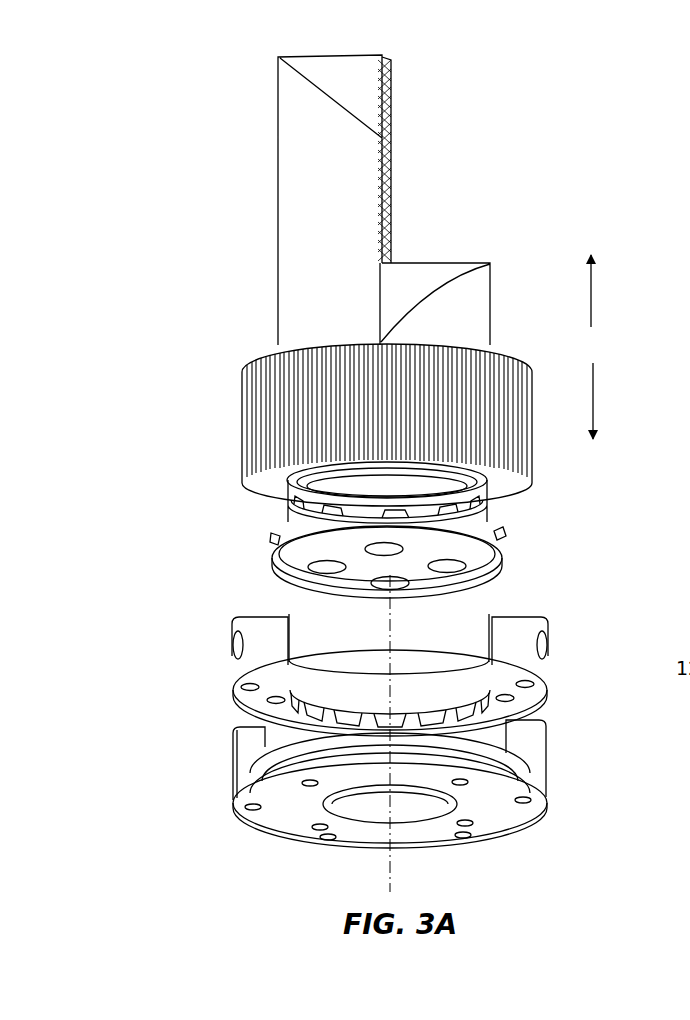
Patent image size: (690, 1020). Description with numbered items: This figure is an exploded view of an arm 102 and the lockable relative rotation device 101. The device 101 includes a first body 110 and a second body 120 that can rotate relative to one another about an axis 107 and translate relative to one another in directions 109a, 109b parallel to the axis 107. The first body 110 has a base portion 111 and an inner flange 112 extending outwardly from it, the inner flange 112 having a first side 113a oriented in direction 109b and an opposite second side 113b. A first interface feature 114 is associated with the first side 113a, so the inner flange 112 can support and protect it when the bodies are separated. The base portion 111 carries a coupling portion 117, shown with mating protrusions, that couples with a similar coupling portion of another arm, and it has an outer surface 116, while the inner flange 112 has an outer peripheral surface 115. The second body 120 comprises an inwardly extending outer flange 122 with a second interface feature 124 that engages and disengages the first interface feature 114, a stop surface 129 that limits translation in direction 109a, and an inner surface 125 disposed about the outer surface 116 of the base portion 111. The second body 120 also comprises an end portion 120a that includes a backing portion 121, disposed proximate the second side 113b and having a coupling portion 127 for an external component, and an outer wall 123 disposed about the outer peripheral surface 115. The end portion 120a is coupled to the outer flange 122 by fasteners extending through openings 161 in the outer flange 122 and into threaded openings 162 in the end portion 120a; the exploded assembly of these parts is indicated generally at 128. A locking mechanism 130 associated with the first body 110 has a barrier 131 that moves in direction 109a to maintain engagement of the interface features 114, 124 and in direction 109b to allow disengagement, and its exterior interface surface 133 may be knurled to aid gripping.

The lockable relative rotation device 101 is at (122, 511).
The arm 102 is at (290, 44).
The axis 107 is at (397, 866).
The first direction 109a is at (594, 404).
The second direction 109b is at (593, 291).
The first body 110 is at (246, 304).
The base portion 111 is at (287, 516).
The inner flange 112 is at (512, 548).
The first side 113a is at (501, 525).
The second side 113b is at (493, 588).
The first interface feature 114 is at (455, 518).
The outer peripheral surface 115 is at (276, 545).
The outer surface 116 is at (300, 505).
The coupling portion 117 is at (391, 142).
The second body 120 is at (190, 622).
The end portion 120a is at (228, 820).
The backing portion 121 is at (504, 825).
The outer flange 122 is at (515, 699).
The outer wall 123 is at (533, 746).
The second interface feature 124 is at (502, 690).
The inner surface 125 is at (320, 672).
The coupling portion 127 is at (316, 830).
The upper ring assembly 128 is at (298, 618).
The stop surface 129 is at (430, 696).
The locking mechanism 130 is at (222, 400).
The barrier 131 is at (244, 432).
The exterior interface surface 133 is at (283, 437).
The openings 161 is at (502, 681).
The openings 162 is at (532, 804).